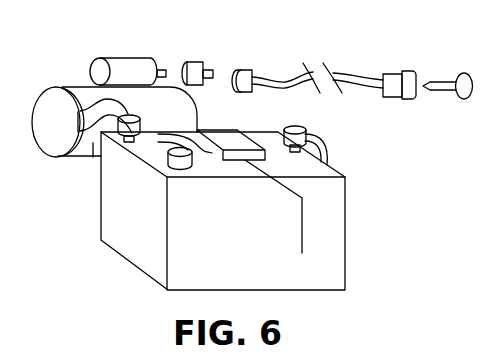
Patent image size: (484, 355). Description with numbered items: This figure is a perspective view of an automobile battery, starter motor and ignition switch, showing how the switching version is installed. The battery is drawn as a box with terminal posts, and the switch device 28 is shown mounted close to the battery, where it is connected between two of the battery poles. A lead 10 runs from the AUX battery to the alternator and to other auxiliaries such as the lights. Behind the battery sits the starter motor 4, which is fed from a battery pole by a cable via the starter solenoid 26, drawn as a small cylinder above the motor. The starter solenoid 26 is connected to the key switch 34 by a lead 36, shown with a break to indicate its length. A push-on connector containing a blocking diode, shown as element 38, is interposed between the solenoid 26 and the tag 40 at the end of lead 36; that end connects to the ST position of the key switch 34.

The starter motor 4 is at (92, 152).
The lead 10 is at (303, 233).
The starter solenoid 26 is at (92, 62).
The switch device 28 is at (238, 160).
The key switch 34 is at (404, 68).
The lead 36 is at (358, 89).
The fitting 38 is at (188, 62).
The tag 40 is at (243, 68).